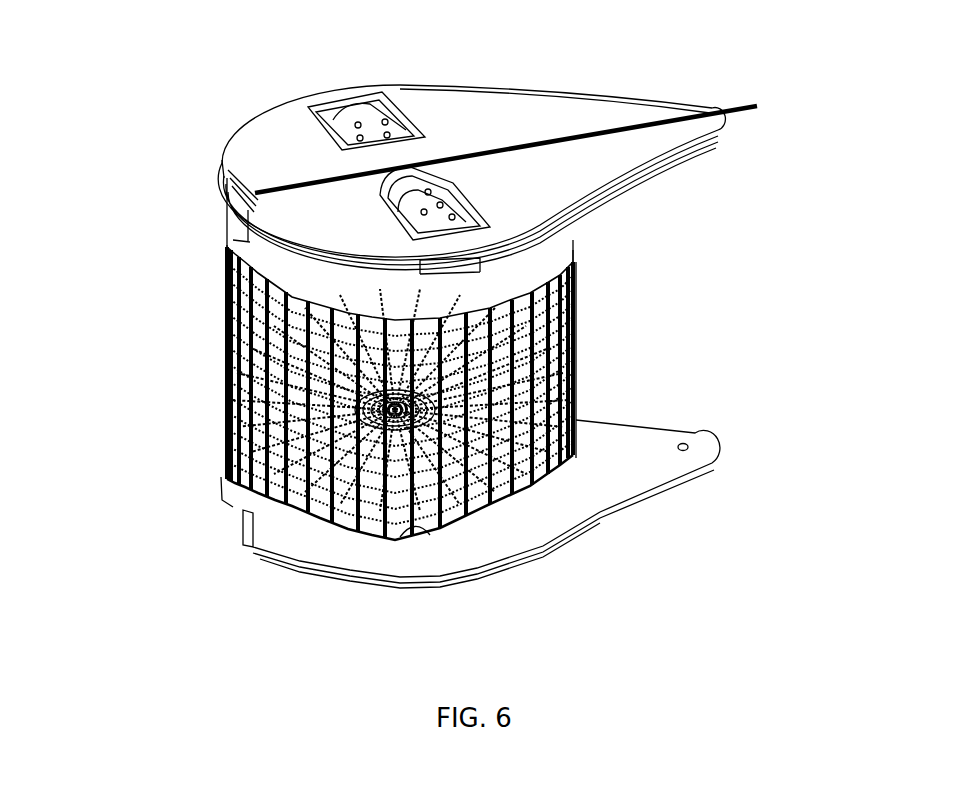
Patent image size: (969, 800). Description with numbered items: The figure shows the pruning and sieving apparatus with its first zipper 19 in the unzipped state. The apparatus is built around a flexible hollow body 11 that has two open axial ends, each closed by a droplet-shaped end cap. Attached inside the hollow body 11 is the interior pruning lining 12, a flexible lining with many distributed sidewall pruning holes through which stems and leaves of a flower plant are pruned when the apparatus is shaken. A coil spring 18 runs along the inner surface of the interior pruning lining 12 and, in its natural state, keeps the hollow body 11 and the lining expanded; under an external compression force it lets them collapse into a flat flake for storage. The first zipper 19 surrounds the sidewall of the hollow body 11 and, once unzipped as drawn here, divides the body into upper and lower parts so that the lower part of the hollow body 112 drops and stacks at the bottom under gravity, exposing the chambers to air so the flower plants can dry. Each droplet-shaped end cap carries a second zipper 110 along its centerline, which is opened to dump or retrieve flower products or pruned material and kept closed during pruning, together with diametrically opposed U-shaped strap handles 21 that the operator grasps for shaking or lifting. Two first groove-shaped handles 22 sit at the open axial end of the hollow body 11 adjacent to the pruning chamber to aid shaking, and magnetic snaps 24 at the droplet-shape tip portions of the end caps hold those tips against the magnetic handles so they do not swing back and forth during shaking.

The hollow body 11 is at (253, 247).
The interior pruning lining 12 is at (573, 355).
The coil spring 18 is at (573, 305).
The first zipper 19 is at (575, 253).
The U-shaped strap handles 21 is at (300, 102).
The first groove-shaped handles 22 is at (232, 200).
The magnetic snaps 24 is at (683, 453).
The second zipper 110 is at (575, 137).
The lower part of the hollow body 112 is at (245, 545).